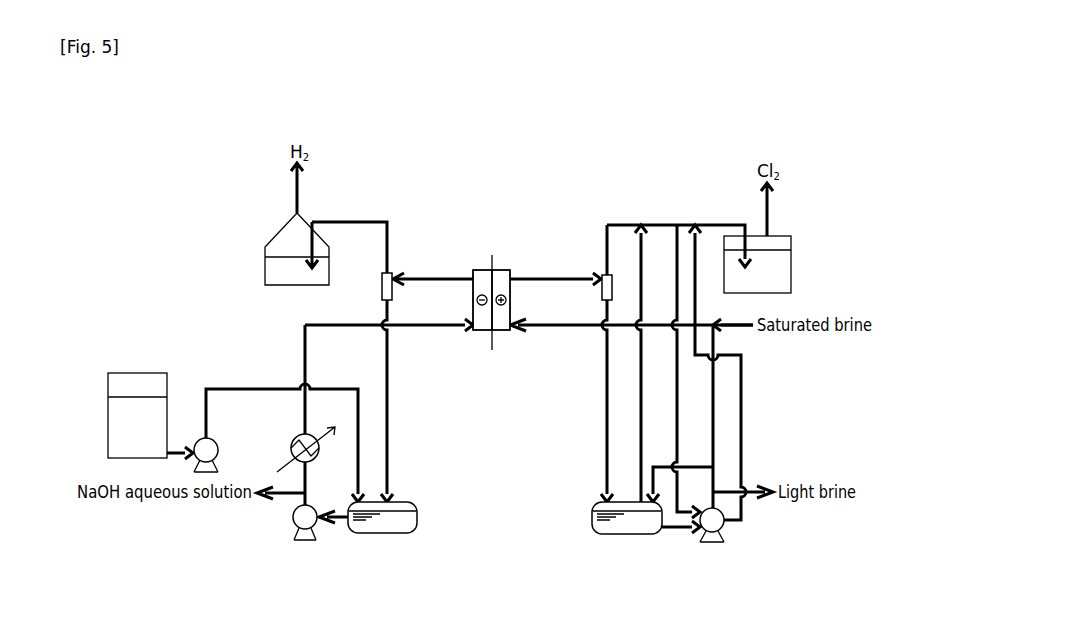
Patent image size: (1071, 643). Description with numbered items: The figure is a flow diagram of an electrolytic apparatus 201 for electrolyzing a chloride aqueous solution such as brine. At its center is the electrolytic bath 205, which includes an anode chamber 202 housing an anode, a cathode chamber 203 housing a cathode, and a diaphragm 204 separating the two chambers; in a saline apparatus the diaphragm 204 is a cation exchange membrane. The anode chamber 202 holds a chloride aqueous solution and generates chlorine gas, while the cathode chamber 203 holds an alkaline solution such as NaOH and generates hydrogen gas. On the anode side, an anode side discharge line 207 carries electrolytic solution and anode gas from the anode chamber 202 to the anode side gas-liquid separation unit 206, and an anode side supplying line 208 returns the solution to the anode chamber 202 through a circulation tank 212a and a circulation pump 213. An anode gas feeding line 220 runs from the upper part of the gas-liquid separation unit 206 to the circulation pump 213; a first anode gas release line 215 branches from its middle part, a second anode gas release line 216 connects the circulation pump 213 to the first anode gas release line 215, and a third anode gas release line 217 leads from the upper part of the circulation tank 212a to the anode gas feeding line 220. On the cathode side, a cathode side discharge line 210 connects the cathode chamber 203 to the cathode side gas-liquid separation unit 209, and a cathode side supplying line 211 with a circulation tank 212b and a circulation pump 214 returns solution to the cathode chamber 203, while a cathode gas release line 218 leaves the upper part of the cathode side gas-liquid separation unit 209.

The electrolytic apparatus 201 is at (513, 144).
The anode chamber 202 is at (503, 274).
The cathode chamber 203 is at (480, 270).
The diaphragm 204 is at (489, 332).
The electrolytic bath 205 is at (505, 261).
The anode side gas-liquid separation unit 206 is at (601, 294).
The anode side discharge line 207 is at (560, 277).
The anode side supplying line 208 is at (557, 332).
The cathode side gas-liquid separation unit 209 is at (394, 293).
The cathode side discharge line 210 is at (430, 272).
The cathode side supplying line 211 is at (430, 332).
The circulation tank 212a is at (593, 507).
The circulation tank 212b is at (418, 508).
The circulation pump 213 is at (712, 535).
The circulation pump 214 is at (308, 533).
The first anode gas release line 215 is at (715, 225).
The second anode gas release line 216 is at (742, 404).
The third anode gas release line 217 is at (641, 392).
The cathode gas release line 218 is at (352, 220).
The anode gas feeding line 220 is at (621, 225).